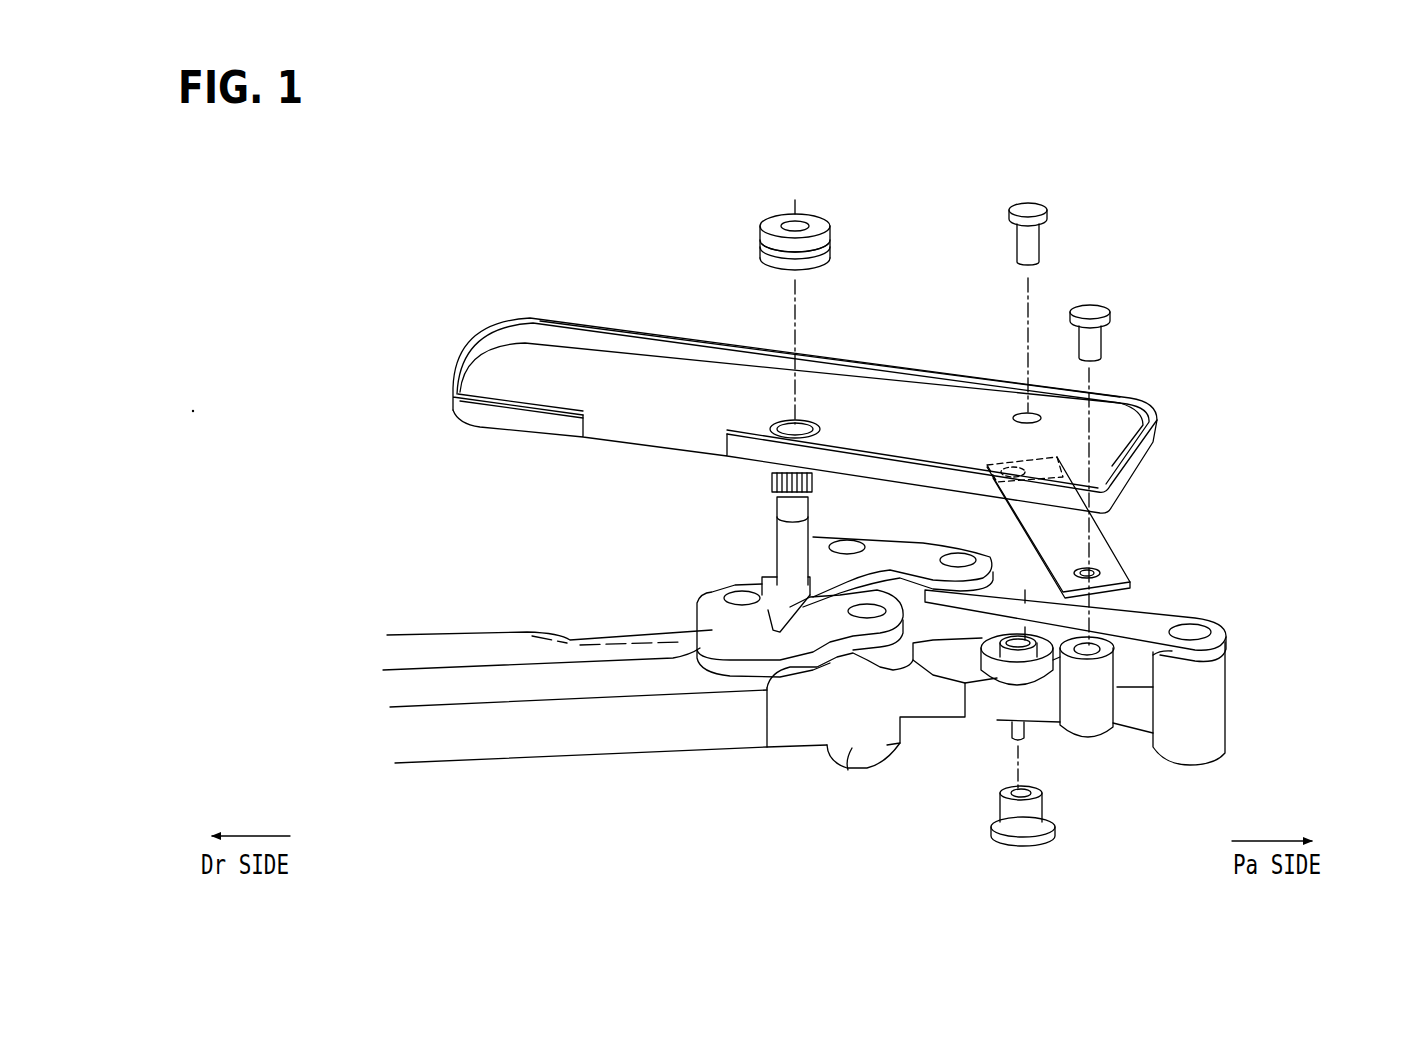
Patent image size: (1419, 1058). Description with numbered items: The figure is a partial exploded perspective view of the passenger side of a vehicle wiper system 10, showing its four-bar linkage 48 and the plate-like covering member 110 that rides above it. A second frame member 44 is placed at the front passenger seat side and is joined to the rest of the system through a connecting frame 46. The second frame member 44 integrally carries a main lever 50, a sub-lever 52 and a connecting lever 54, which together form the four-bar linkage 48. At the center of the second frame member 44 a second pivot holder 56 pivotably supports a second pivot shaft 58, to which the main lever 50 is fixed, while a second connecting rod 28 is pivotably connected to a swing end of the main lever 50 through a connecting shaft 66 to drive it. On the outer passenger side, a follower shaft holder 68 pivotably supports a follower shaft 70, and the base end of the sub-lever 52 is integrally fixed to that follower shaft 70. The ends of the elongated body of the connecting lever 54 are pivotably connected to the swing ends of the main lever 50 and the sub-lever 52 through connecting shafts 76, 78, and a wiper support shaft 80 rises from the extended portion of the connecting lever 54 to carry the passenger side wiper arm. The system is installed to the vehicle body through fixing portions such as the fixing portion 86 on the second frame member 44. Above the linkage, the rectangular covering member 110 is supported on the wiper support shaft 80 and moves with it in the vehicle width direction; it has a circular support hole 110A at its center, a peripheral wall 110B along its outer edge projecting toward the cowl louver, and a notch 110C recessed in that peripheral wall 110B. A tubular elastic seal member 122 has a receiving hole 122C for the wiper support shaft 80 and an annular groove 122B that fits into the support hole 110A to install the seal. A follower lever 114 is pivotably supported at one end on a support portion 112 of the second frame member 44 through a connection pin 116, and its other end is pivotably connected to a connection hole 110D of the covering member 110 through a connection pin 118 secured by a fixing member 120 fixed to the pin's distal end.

The wiper system 10 is at (1252, 222).
The second connecting rod 28 is at (462, 630).
The second frame member 44 is at (931, 730).
The connecting frame 46 is at (494, 763).
The four-bar linkage 48 is at (1228, 564).
The main lever 50 is at (708, 596).
The sub-lever 52 is at (1152, 600).
The connecting lever 54 is at (908, 538).
The second pivot holder 56 is at (847, 752).
The second pivot shaft 58 is at (870, 607).
The connecting shaft 66 is at (745, 596).
The follower shaft holder 68 is at (1232, 703).
The follower shaft 70 is at (1200, 630).
The connecting shaft 76 is at (848, 545).
The connecting shaft 78 is at (961, 557).
The wiper support shaft 80 is at (770, 485).
The fixing portion 86 is at (1016, 650).
The covering member 110 is at (540, 303).
The support hole 110A is at (806, 426).
The peripheral wall 110B is at (632, 330).
The notch 110C is at (635, 432).
The connection hole 110D is at (1022, 414).
The support portion 112 is at (1100, 750).
The follower lever 114 is at (1120, 522).
The connection pin 116 is at (1115, 302).
The connection pin 118 is at (1040, 204).
The fixing member 120 is at (1043, 840).
The seal member 122 is at (842, 216).
The annular groove 122B is at (833, 252).
The receiving hole 122C is at (790, 222).